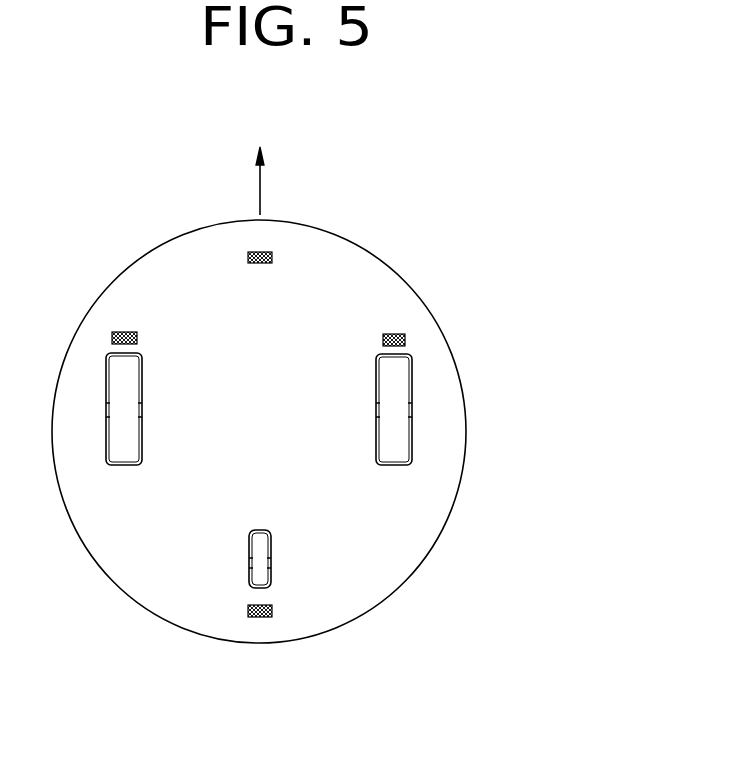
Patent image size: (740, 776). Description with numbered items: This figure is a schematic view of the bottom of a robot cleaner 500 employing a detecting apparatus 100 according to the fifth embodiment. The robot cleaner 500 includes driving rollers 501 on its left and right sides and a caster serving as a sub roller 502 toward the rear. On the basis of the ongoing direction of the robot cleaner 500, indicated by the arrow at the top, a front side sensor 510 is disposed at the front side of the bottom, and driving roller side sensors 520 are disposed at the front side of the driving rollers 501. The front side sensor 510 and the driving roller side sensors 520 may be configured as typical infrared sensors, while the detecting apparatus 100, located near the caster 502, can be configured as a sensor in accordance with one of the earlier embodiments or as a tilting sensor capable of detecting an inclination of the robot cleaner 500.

The robot cleaner 500 is at (370, 273).
The front side sensor 510 is at (252, 252).
The driving roller side sensors 520 is at (393, 334).
The driving rollers 501 is at (392, 448).
The caster 502 is at (265, 552).
The detecting apparatus 100 is at (273, 617).